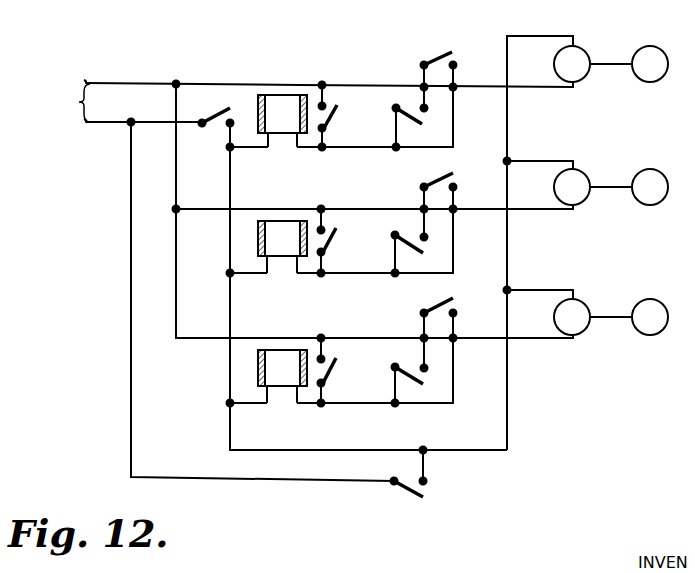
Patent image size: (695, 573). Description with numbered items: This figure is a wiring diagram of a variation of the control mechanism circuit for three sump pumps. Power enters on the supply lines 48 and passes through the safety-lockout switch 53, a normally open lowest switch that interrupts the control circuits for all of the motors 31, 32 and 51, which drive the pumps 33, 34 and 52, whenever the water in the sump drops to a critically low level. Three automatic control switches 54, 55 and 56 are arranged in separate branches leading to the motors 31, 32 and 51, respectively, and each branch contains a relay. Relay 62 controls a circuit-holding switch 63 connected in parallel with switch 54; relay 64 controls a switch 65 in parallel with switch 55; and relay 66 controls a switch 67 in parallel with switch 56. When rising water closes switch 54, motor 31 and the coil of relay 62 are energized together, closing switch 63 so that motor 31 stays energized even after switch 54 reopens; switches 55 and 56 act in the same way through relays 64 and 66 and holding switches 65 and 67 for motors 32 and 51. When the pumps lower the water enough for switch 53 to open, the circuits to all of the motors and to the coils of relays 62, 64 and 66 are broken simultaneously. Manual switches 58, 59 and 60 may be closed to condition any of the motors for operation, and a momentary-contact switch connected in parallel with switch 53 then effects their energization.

The power supply lines 48 is at (79, 101).
The manual switch 60 is at (438, 50).
The manual switch 59 is at (446, 174).
The manual switch 58 is at (445, 299).
The safety-lockout switch 53 is at (408, 492).
The automatic control switch 56 is at (412, 120).
The automatic control switch 55 is at (410, 248).
The automatic control switch 54 is at (410, 380).
The holding switch 67 is at (333, 121).
The circuit-holding switch 65 is at (336, 241).
The circuit-holding switch 63 is at (334, 373).
The relay 66 is at (283, 130).
The relay 64 is at (283, 254).
The relay 62 is at (283, 384).
The motor 51 is at (581, 78).
The motor 32 is at (581, 201).
The motor 31 is at (581, 331).
The pump 52 is at (655, 79).
The pump 34 is at (655, 202).
The pump 33 is at (655, 332).